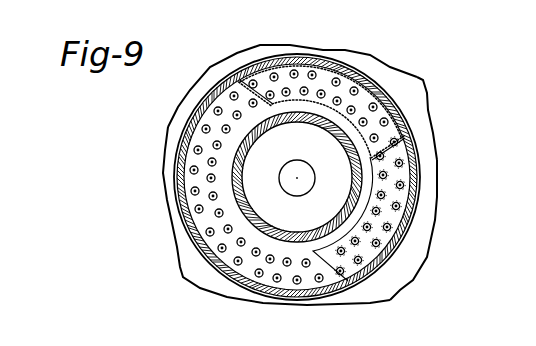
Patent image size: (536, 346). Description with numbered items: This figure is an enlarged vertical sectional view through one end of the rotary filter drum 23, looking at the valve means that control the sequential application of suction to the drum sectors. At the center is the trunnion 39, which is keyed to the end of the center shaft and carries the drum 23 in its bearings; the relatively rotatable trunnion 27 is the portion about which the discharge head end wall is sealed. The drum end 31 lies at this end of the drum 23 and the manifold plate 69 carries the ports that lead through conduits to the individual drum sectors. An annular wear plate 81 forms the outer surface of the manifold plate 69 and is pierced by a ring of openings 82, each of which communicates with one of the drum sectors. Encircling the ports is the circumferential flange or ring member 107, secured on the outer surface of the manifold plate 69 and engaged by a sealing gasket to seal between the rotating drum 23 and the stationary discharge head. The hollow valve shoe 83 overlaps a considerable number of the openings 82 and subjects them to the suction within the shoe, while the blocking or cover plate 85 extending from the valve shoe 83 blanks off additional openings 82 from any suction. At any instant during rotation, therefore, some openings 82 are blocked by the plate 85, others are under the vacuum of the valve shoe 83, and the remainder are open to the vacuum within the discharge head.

The rotary filter drum 23 is at (424, 80).
The manifold plate 69 is at (423, 112).
The drum end 31 is at (432, 195).
The annular wear plate 81 is at (270, 281).
The circumferential flange or ring member 107 is at (408, 164).
The openings 82 is at (197, 148).
The hollow valve shoe 83 is at (308, 80).
The blocking or cover plate 85 is at (388, 258).
The trunnion 27 is at (275, 236).
The trunnion 39 is at (314, 180).